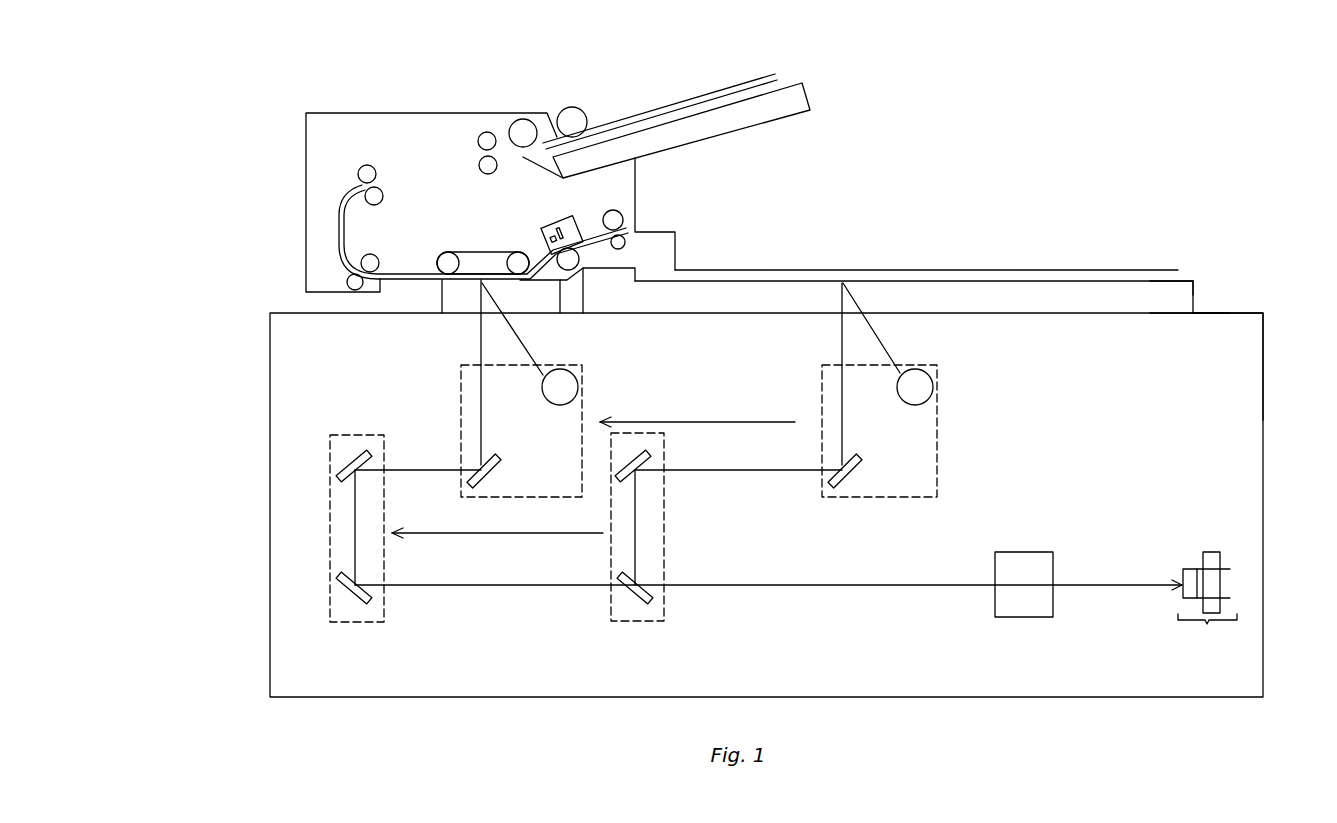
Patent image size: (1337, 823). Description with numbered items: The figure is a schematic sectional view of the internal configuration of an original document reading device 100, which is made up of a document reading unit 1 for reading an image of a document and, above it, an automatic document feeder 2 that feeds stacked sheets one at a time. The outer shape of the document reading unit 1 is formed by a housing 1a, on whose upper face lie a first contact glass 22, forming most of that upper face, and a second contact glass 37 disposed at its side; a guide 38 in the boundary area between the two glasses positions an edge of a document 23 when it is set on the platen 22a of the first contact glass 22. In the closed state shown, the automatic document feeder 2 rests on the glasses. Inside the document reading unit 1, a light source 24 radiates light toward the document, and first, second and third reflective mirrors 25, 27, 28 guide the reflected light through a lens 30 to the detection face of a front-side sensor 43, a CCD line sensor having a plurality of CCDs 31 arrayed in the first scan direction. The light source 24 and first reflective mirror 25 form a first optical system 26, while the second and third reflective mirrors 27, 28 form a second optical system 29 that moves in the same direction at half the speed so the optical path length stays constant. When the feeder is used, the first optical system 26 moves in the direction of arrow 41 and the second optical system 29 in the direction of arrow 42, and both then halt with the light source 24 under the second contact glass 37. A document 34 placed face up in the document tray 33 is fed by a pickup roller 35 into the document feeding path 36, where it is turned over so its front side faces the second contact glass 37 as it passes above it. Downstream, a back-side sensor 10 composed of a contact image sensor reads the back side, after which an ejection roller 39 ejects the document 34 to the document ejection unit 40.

The original document reading device 100 is at (1040, 142).
The document reading unit 1 is at (855, 705).
The housing 1a is at (1265, 355).
The automatic document feeder 2 is at (424, 97).
The back-side sensor 10 is at (573, 216).
The first contact glass 22 is at (1188, 297).
The platen 22a is at (1185, 282).
The document 23 is at (1078, 281).
The light source 24 is at (578, 386).
The first reflective mirror 25 is at (500, 480).
The first optical system 26 is at (460, 410).
The second reflective mirror 27 is at (352, 452).
The third reflective mirror 28 is at (352, 601).
The second optical system 29 is at (332, 568).
The lens 30 is at (1022, 608).
The CCD 31 is at (1183, 592).
The document tray 33 is at (810, 94).
The document 34 is at (703, 103).
The pickup roller 35 is at (565, 108).
The document feeding path 36 is at (340, 228).
The second contact glass 37 is at (458, 298).
The guide 38 is at (563, 312).
The ejection roller 39 is at (612, 210).
The document ejection unit 40 is at (975, 270).
The arrow 41 is at (714, 421).
The arrow 42 is at (495, 535).
The front-side sensor 43 is at (1207, 608).